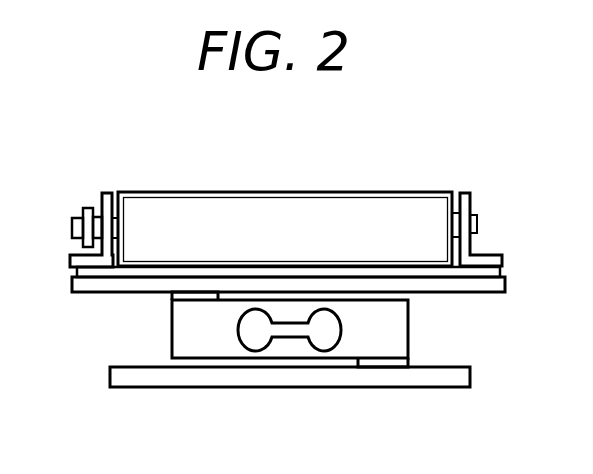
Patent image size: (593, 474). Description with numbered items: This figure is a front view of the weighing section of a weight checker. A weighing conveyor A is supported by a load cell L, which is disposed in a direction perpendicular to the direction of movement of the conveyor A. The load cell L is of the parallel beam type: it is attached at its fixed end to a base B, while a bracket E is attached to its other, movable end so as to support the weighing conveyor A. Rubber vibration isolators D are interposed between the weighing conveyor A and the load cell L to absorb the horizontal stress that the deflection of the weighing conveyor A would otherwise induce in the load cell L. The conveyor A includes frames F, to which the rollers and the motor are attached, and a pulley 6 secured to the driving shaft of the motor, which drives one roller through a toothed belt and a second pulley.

The weighing conveyor A is at (285, 190).
The frames F is at (107, 192).
The pulley 6 is at (88, 206).
The rubber vibration isolators D is at (80, 270).
The bracket E is at (107, 285).
The load cell L is at (410, 330).
The base B is at (187, 378).